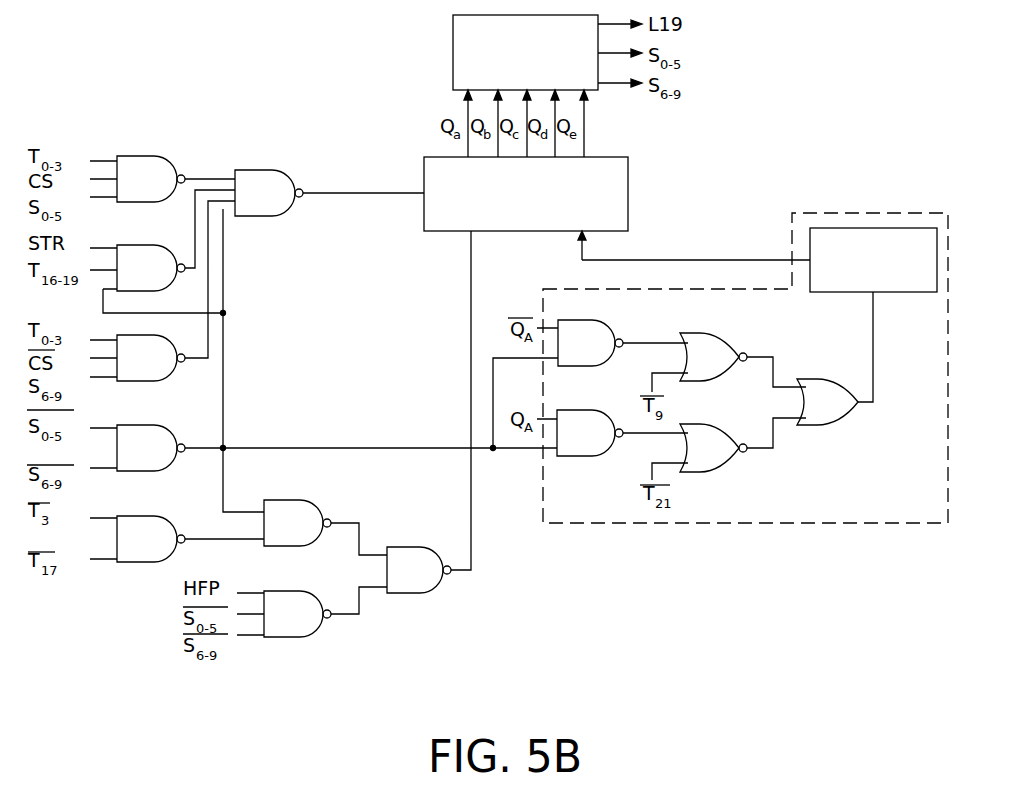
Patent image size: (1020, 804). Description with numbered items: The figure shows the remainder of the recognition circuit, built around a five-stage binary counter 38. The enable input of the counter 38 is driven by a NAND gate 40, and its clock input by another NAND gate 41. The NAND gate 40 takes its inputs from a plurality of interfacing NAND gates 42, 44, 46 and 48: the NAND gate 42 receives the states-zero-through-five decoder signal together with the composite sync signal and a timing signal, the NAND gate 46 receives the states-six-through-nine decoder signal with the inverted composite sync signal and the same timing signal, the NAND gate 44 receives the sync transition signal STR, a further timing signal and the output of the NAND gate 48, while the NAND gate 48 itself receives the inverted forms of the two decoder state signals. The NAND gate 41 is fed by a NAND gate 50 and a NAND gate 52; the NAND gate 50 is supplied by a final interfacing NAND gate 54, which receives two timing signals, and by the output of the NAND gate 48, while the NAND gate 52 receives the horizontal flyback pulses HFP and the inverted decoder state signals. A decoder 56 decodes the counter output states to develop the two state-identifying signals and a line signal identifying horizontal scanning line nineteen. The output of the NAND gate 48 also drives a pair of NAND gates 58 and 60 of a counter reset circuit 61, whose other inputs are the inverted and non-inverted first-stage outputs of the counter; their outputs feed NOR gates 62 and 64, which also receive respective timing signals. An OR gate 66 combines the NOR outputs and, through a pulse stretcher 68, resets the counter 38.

The 5-stage binary counter 38 is at (630, 170).
The NAND gate 40 is at (258, 170).
The NAND gate 41 is at (422, 593).
The interfacing NAND gate 42 is at (148, 156).
The interfacing NAND gate 44 is at (145, 245).
The interfacing NAND gate 46 is at (153, 336).
The interfacing NAND gate 48 is at (152, 425).
The NAND gate 50 is at (305, 500).
The NAND gate 52 is at (298, 637).
The interfacing NAND gate 54 is at (155, 516).
The decoder 56 is at (453, 62).
The NAND gate 58 is at (600, 320).
The NAND gate 60 is at (580, 456).
The counter reset circuit 61 is at (795, 523).
The NOR gate 62 is at (705, 335).
The NOR gate 64 is at (725, 467).
The OR gate 66 is at (815, 425).
The pulse stretcher 68 is at (870, 228).